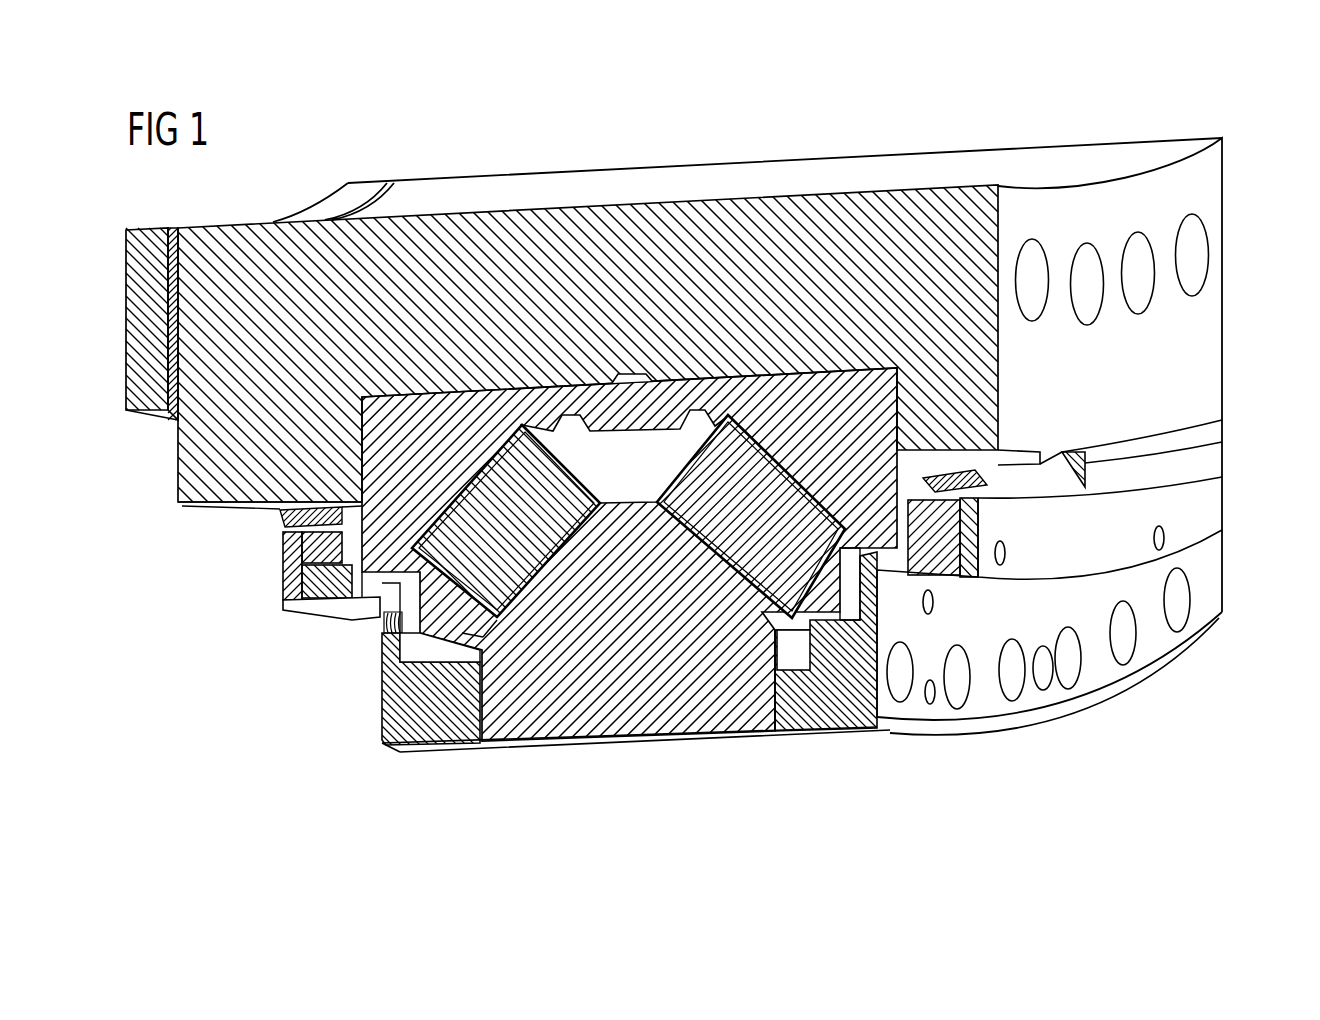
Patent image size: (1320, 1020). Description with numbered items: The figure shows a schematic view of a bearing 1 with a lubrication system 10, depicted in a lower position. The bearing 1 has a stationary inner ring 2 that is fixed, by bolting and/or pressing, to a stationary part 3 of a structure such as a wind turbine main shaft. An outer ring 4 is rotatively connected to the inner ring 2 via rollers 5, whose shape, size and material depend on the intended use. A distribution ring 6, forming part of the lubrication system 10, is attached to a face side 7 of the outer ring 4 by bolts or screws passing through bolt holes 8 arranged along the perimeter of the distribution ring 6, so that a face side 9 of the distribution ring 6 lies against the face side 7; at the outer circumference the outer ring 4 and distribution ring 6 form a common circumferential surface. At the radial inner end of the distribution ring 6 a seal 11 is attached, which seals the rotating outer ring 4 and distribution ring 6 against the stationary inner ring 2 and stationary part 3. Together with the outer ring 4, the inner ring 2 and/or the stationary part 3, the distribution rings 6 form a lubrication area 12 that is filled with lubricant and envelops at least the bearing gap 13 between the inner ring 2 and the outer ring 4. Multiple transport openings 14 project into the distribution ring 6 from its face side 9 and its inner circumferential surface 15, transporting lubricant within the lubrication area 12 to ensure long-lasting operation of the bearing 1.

The bearing 1 is at (172, 610).
The inner ring 2 is at (374, 450).
The stationary part 3 is at (190, 440).
The outer ring 4 is at (642, 727).
The rollers 5 is at (563, 486).
The distribution ring 6 is at (435, 740).
The face side 7 is at (470, 727).
The bolt holes 8 is at (958, 665).
The face side 9 is at (773, 703).
The lubrication system 10 is at (1160, 705).
The seal 11 is at (1213, 482).
The lubrication area 12 is at (850, 600).
The bearing gap 13 is at (483, 635).
The transport openings 14 is at (797, 657).
The inner circumferential surface 15 is at (838, 620).